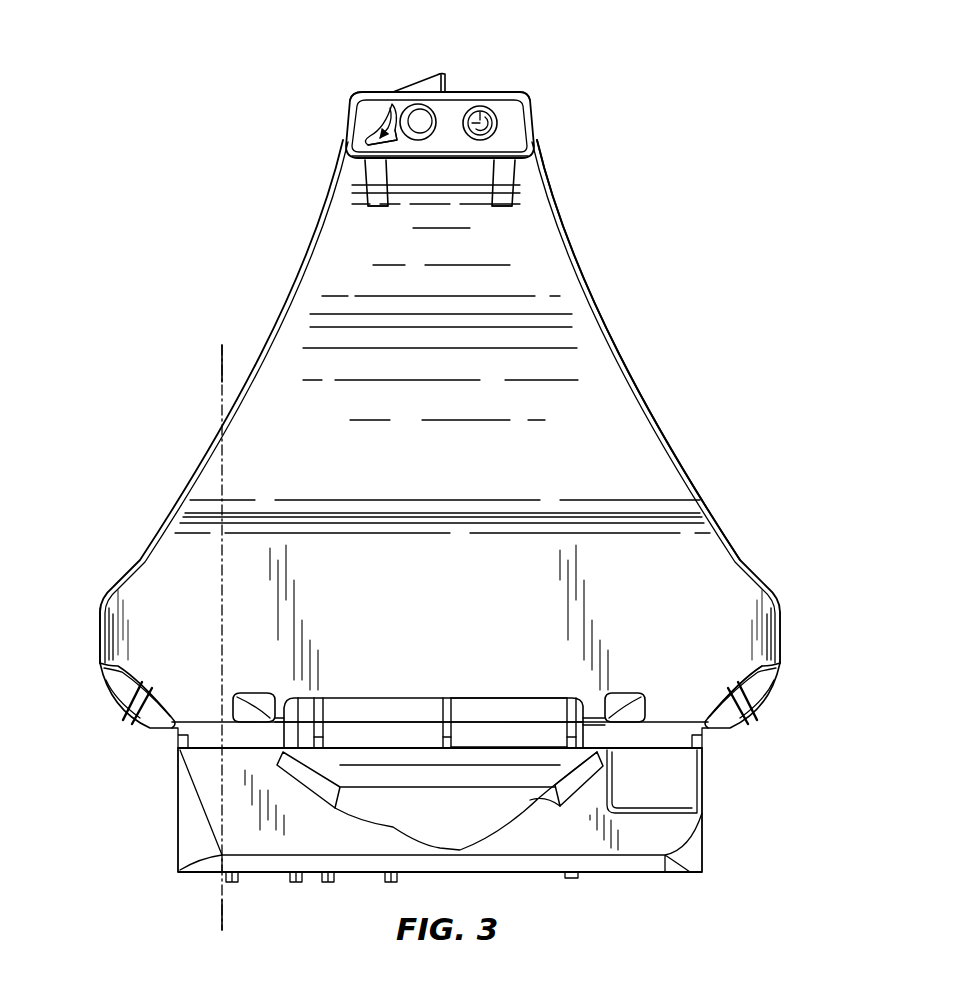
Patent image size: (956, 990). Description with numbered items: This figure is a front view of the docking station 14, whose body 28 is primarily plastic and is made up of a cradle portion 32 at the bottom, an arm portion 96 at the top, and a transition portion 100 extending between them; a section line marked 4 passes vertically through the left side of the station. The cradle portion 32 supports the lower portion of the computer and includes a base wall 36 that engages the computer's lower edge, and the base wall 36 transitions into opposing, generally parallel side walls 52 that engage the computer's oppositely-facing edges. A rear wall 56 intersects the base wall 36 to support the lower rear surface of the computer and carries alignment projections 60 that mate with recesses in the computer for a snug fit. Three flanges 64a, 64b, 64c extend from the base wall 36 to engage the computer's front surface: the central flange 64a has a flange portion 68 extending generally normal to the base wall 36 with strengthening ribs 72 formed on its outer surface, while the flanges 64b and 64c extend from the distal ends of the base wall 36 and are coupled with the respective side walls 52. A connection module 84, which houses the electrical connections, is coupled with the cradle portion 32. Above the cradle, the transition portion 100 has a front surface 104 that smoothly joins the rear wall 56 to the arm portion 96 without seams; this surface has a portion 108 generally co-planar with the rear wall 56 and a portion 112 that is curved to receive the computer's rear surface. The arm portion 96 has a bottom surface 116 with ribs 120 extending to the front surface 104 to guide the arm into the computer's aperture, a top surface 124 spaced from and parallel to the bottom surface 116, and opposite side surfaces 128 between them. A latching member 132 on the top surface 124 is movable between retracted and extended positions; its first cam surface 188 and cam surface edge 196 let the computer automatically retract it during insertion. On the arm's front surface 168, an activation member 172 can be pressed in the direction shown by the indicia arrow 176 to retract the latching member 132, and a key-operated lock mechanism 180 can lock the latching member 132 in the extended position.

The section line 4- 4 is at (220, 364).
The docking station 14 is at (190, 265).
The body 28 is at (653, 415).
The cradle portion 32 is at (147, 617).
The base wall 36 is at (215, 722).
The side walls 52 is at (100, 640).
The rear wall 56 is at (683, 700).
The alignment projections 60 is at (254, 700).
The flange 64a is at (398, 722).
The flange 64b is at (128, 700).
The flange 64c is at (755, 688).
The flange portion 68 is at (515, 700).
The strengthening ribs 72 is at (322, 712).
The connection module 84 is at (705, 835).
The arm portion 96 is at (402, 120).
The transition portion 100 is at (535, 278).
The front surface 104 is at (460, 254).
The portion 108 is at (665, 560).
The portion 112 is at (580, 358).
The bottom surface 116 is at (420, 172).
The ribs 120 is at (372, 172).
The top surface 124 is at (487, 92).
The side surfaces 128 is at (360, 98).
The latching member 132 is at (437, 70).
The front surface 168 is at (452, 140).
The activation member 172 is at (400, 136).
The indicia arrow 176 is at (378, 128).
The lock mechanism 180 is at (492, 127).
The first cam surface 188 is at (437, 80).
The cam surface edge 196 is at (405, 85).